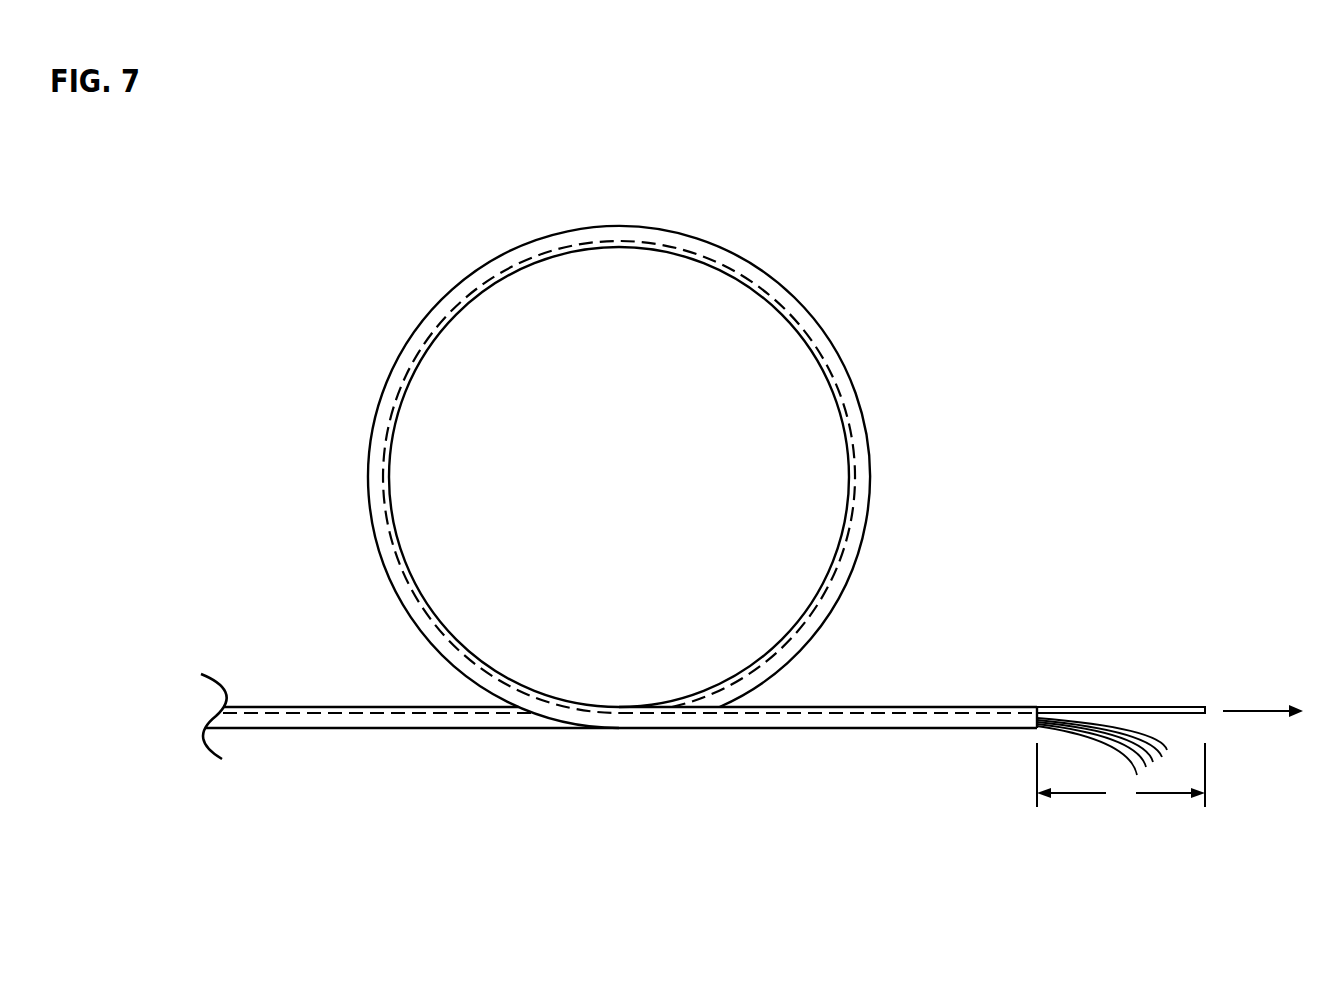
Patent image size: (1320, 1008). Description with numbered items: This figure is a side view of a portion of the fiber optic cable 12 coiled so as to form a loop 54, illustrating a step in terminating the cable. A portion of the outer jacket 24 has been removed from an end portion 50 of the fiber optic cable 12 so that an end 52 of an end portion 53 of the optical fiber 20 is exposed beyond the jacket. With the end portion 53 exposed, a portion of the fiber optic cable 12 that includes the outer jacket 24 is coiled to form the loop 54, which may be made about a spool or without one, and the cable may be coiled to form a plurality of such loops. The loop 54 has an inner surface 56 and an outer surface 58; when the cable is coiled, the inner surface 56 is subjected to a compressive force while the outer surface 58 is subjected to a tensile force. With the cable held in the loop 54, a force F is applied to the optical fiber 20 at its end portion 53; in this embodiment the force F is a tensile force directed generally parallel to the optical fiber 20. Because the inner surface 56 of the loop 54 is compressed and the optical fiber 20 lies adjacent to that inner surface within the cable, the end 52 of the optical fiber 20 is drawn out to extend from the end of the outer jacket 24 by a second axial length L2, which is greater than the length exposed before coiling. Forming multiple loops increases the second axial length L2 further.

The fiber optic cable 12 is at (367, 246).
The optical fiber 20 is at (987, 706).
The outer jacket 24 is at (880, 729).
The end portion 50 is at (905, 706).
The end 52 is at (1205, 708).
The end portion 53 is at (1121, 675).
The loop 54 is at (757, 266).
The inner surface 56 is at (797, 336).
The outer surface 58 is at (851, 378).
The force F is at (1258, 713).
The second axial length L2 is at (1121, 776).